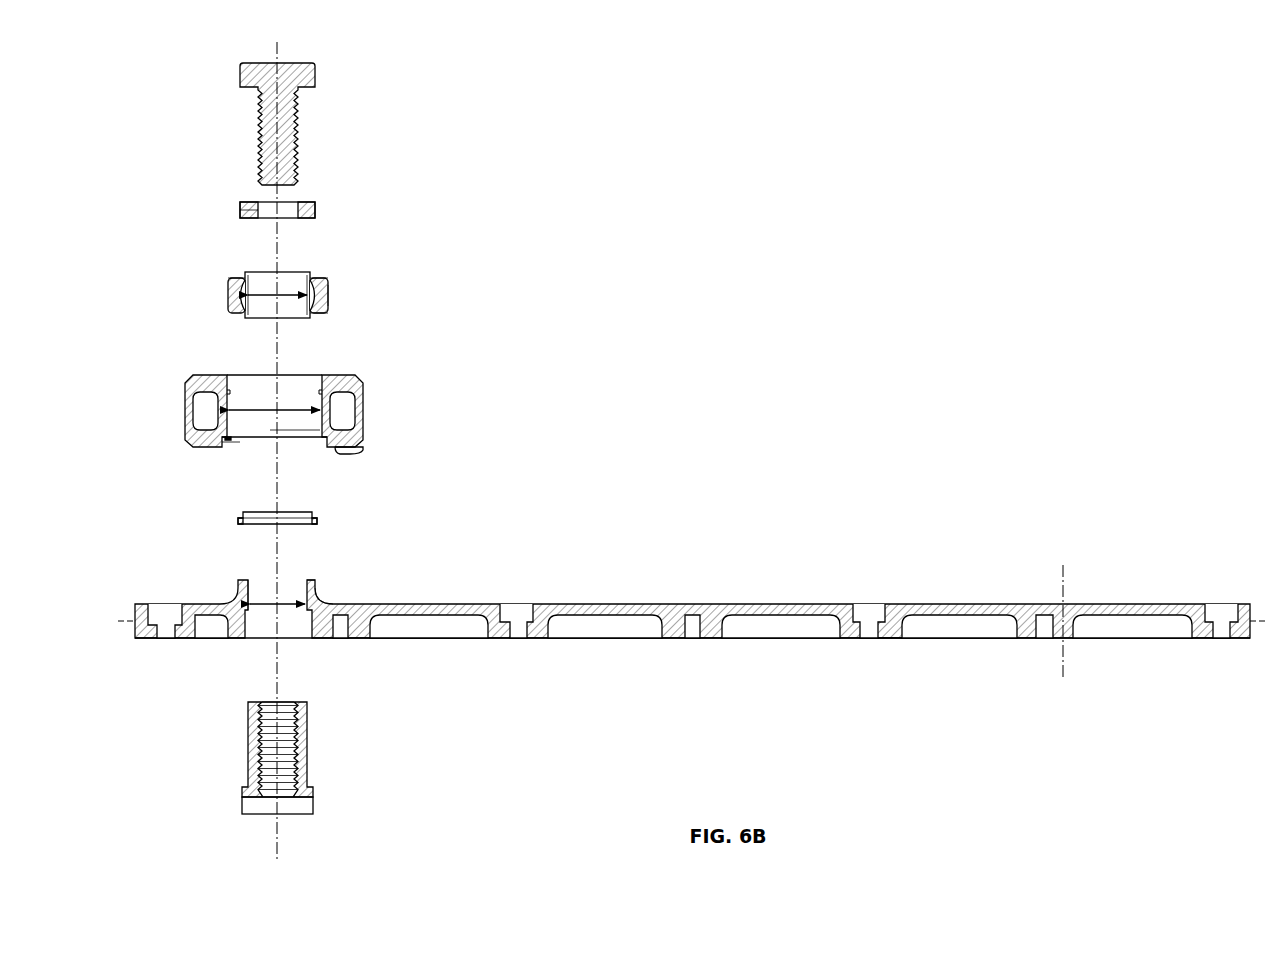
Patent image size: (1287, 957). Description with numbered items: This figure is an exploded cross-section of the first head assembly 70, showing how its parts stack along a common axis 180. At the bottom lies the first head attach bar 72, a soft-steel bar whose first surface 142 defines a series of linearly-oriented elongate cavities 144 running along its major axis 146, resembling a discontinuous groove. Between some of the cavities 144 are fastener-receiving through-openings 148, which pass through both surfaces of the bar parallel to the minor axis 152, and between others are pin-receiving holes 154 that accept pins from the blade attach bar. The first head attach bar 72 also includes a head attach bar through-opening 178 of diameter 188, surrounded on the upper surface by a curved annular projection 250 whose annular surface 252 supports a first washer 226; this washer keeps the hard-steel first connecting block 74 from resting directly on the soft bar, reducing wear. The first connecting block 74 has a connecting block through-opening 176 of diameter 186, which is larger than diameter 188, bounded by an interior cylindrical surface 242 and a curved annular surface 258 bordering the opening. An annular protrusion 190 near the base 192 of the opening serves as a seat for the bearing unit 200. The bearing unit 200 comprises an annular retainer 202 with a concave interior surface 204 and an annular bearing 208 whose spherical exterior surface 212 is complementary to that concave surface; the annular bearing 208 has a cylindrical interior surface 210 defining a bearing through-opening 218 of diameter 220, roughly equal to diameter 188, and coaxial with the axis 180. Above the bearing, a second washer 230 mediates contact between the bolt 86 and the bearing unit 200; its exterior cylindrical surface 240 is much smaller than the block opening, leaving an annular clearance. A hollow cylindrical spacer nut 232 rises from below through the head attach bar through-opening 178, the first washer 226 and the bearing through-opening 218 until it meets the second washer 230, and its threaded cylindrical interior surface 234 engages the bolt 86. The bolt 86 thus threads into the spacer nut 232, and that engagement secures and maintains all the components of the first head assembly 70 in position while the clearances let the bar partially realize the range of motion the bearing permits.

The first head assembly 70 is at (178, 68).
The bolt 86 is at (283, 63).
The second washer 230 is at (311, 210).
The exterior cylindrical surface 240 is at (240, 207).
The bearing unit 200 is at (212, 273).
The diameter 220 is at (277, 290).
The cylindrical interior surface 210 is at (290, 282).
The annular bearing 208 is at (313, 282).
The spherical exterior surface 212 is at (237, 282).
The concave interior surface 204 is at (326, 290).
The annular retainer 202 is at (328, 305).
The bearing through-opening 218 is at (261, 312).
The interior cylindrical surface 242 is at (322, 390).
The first connecting block 74 is at (360, 382).
The diameter 186 is at (277, 410).
The base 192 is at (337, 452).
The curved annular surface 258 is at (227, 442).
The annular protrusion 190 is at (233, 442).
The connecting block through-opening 176 is at (295, 423).
The first washer 226 is at (318, 518).
The first head attach bar 72 is at (713, 615).
The major axis 146 is at (122, 621).
The linearly-oriented elongate cavities 144 is at (782, 630).
The pin-receiving holes 154 is at (693, 628).
The fastener-receiving through-openings 148 is at (868, 610).
The first surface 142 is at (890, 638).
The minor axis 152 is at (1063, 660).
The head attach bar through-opening 178 is at (258, 578).
The annular surface 252 is at (318, 580).
The curved annular projection 250 is at (330, 600).
The diameter 188 is at (277, 606).
The hollow cylindrical spacer nut 232 is at (310, 762).
The threaded cylindrical interior surface 234 is at (303, 715).
The axis 180 is at (280, 820).